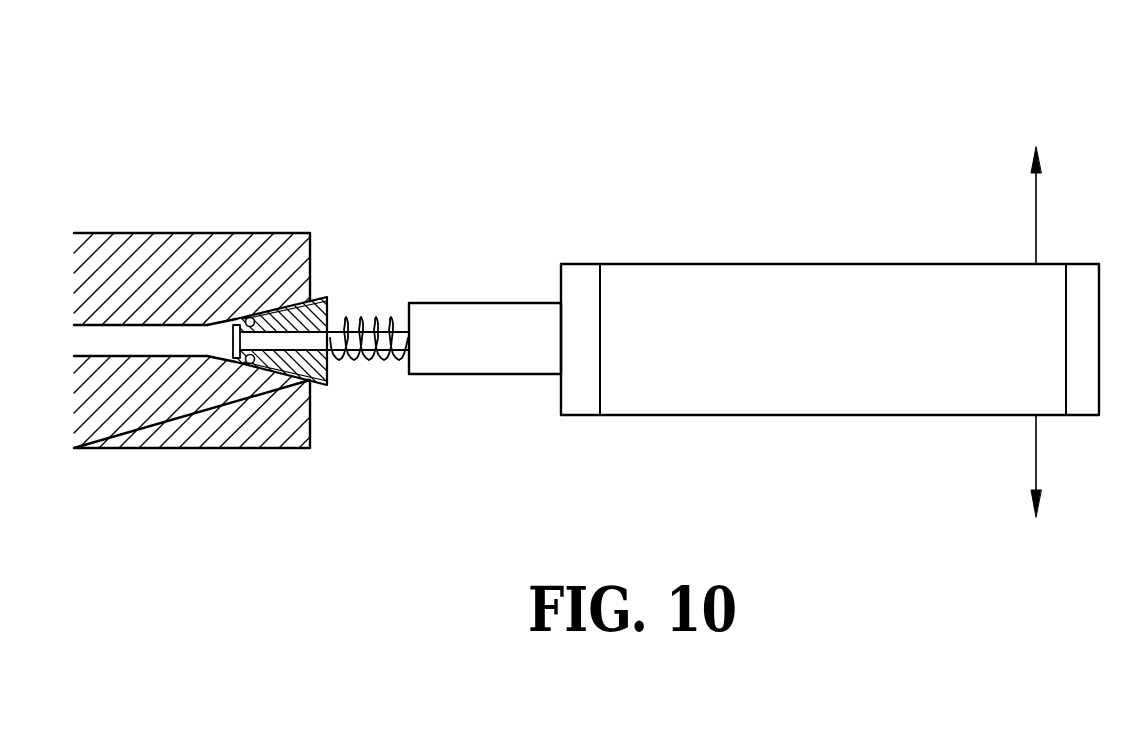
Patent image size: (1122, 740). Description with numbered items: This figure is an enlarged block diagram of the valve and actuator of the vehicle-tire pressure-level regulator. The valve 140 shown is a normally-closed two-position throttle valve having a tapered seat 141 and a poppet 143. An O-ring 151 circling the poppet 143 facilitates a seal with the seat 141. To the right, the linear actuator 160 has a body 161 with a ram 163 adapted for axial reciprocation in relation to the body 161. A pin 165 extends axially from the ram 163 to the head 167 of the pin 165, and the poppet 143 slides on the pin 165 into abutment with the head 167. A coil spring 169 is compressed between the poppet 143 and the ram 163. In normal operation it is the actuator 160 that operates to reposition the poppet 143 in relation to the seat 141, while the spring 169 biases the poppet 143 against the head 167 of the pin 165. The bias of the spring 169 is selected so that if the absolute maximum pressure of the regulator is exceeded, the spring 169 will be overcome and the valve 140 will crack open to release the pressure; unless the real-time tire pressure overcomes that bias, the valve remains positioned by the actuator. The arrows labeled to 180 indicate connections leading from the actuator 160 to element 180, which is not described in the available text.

The valve 140 is at (157, 338).
The tapered seat 141 is at (152, 233).
The poppet 143 is at (327, 297).
The O-ring 151 is at (250, 317).
The linear actuator 160 is at (875, 264).
The body 161 is at (862, 353).
The ram 163 is at (487, 352).
The pin 165 is at (371, 317).
The head 167 is at (236, 361).
The coil spring 169 is at (388, 362).
The controller (TO 180) 180 is at (1037, 335).